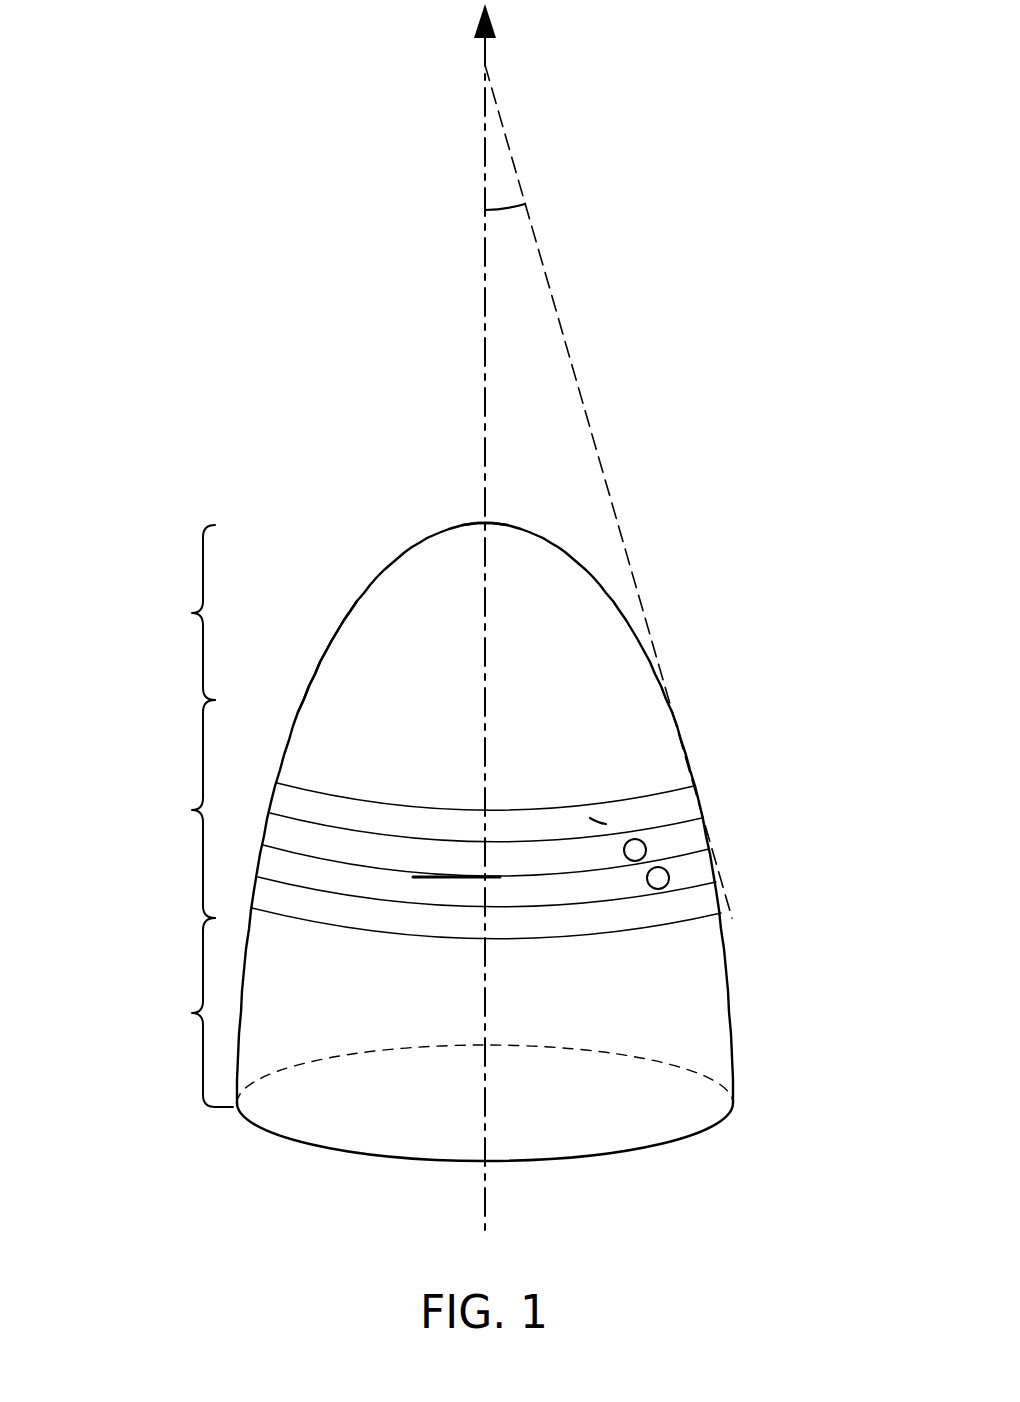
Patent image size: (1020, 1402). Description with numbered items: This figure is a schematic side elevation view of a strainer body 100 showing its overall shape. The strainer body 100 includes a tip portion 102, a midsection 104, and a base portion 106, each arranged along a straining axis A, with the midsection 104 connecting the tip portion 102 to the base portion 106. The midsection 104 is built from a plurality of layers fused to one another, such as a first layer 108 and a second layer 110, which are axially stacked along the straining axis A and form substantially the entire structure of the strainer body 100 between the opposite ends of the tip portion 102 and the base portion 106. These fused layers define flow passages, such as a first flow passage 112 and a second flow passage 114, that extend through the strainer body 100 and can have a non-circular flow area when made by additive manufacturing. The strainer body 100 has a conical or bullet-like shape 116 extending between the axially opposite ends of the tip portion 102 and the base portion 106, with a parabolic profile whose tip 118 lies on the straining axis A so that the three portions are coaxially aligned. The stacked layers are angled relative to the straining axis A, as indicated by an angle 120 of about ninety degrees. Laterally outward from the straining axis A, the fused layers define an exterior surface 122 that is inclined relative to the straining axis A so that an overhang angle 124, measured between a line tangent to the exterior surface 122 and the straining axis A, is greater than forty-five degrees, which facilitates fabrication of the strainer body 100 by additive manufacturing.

The strainer body 100 is at (256, 1172).
The tip portion 102 is at (192, 613).
The midsection 104 is at (192, 810).
The base portion 106 is at (192, 1013).
The first layer 108 is at (540, 855).
The second layer 110 is at (507, 893).
The first flow passage 112 is at (646, 848).
The second flow passage 114 is at (669, 880).
The conical or bullet-like shape 116 is at (342, 555).
The tip 118 is at (488, 522).
The angle 120 is at (485, 850).
The exterior surface 122 is at (603, 824).
The overhang angle 124 is at (503, 210).
The straining axis A is at (485, 378).